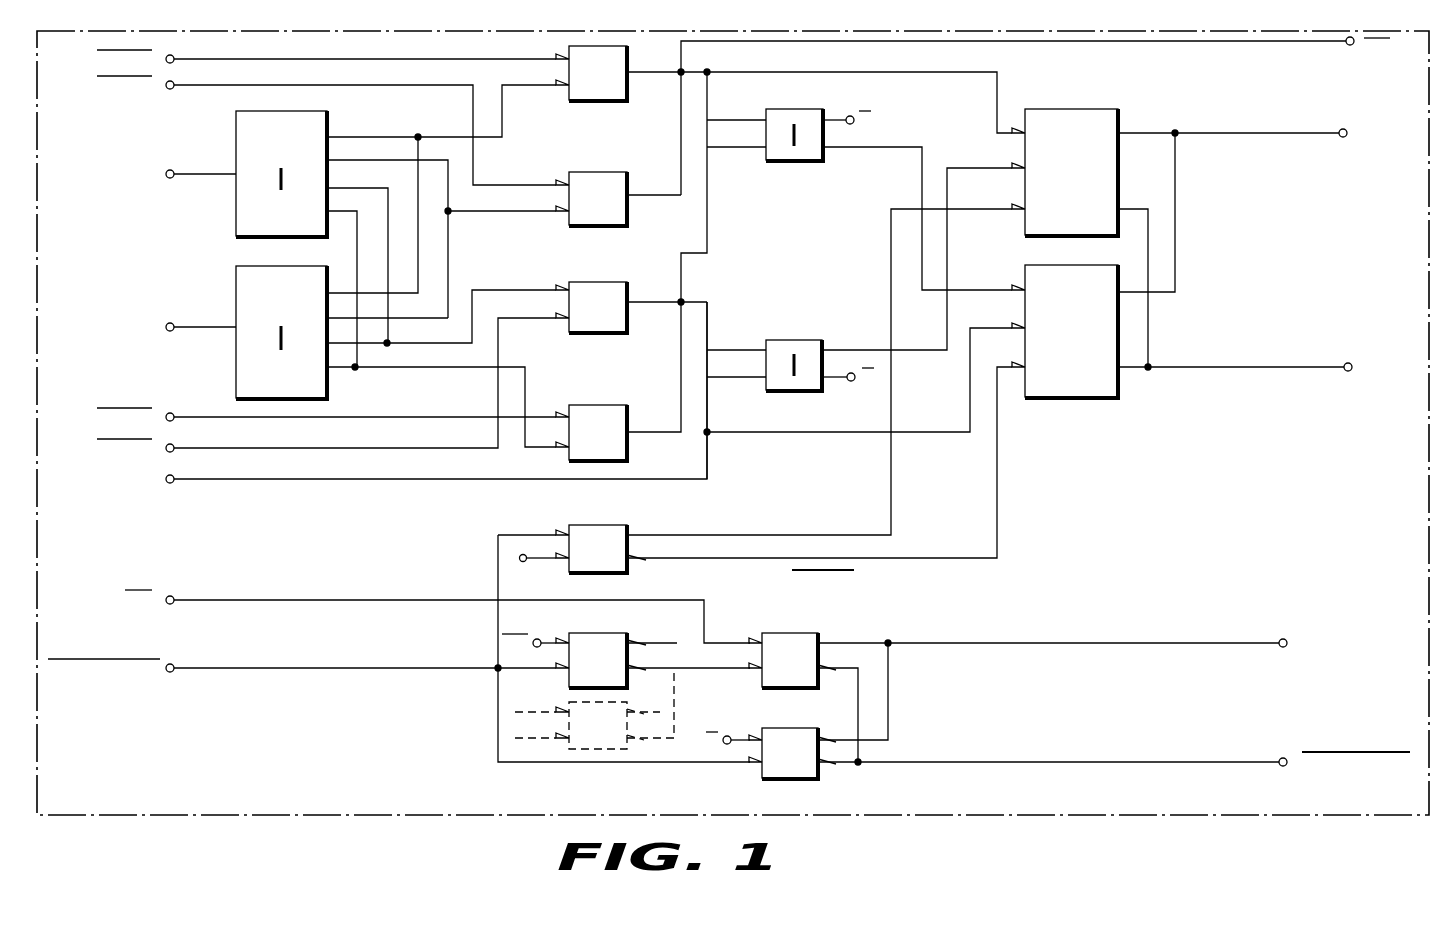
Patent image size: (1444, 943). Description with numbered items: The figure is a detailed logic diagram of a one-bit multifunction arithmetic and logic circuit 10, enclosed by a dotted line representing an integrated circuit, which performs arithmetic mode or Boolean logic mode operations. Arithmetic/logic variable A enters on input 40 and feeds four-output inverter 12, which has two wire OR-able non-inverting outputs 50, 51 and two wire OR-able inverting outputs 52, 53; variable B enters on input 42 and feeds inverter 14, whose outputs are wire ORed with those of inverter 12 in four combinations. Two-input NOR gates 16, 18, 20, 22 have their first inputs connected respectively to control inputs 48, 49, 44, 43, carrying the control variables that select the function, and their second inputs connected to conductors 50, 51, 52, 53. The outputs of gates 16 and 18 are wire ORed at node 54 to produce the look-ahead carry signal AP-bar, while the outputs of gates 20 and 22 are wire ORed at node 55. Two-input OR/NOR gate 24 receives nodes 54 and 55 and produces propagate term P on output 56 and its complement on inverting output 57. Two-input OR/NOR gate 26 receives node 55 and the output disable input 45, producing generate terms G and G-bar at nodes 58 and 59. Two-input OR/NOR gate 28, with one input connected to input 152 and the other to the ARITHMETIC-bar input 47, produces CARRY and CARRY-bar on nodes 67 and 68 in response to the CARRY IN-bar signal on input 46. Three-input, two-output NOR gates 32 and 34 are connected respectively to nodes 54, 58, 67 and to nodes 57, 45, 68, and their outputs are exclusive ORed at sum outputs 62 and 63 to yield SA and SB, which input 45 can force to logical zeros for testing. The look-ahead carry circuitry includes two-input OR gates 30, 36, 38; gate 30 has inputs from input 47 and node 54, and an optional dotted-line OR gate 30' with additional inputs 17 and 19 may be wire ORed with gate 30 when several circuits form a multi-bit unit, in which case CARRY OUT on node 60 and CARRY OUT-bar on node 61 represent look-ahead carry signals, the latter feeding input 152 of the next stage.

The arithmetic and logic circuit 10 is at (272, 734).
The four-output inverter 12 is at (235, 126).
The inverter 14 is at (236, 282).
The two-input NOR gate 16 is at (600, 101).
The additional input 17 is at (538, 712).
The two-input NOR gate 18 is at (600, 172).
The additional input 19 is at (540, 724).
The two-input NOR gate 20 is at (600, 282).
The two-input NOR gate 22 is at (600, 405).
The two-input OR/NOR gate 24 is at (785, 109).
The two-input OR/NOR gate 26 is at (792, 340).
The two-input OR/NOR gate 28 is at (600, 525).
The two-input OR gate 30 is at (632, 647).
The additional two-input OR gate 30' is at (621, 708).
The three-input, two-output NOR gate 32 is at (1075, 109).
The three-input, two-output NOR gate 34 is at (1090, 400).
The two-input OR gate 36 is at (790, 633).
The two-input OR gate 38 is at (790, 728).
The arithmetic/logic input 40 is at (218, 152).
The arithmetic/logic input 42 is at (216, 305).
The control input 43 is at (185, 414).
The control input 44 is at (185, 445).
The output disable input 45 is at (185, 476).
The carry in input 46 is at (183, 600).
The arithmetic input 47 is at (183, 668).
The control input 48 is at (230, 59).
The control input 49 is at (236, 70).
The non-inverting output 50 is at (358, 129).
The non-inverting output 51 is at (358, 160).
The inverting output 52 is at (358, 188).
The inverting output 53 is at (388, 378).
The node 54 is at (715, 68).
The node 55 is at (681, 302).
The output 56 is at (840, 117).
The inverting output 57 is at (838, 150).
The node 58 is at (838, 346).
The node 59 is at (855, 383).
The node 60 is at (1092, 642).
The node 61 is at (1081, 762).
The sum output 62 is at (1282, 134).
The sum output 63 is at (1282, 368).
The node 67 is at (891, 510).
The node 68 is at (998, 538).
The input 152 is at (521, 562).